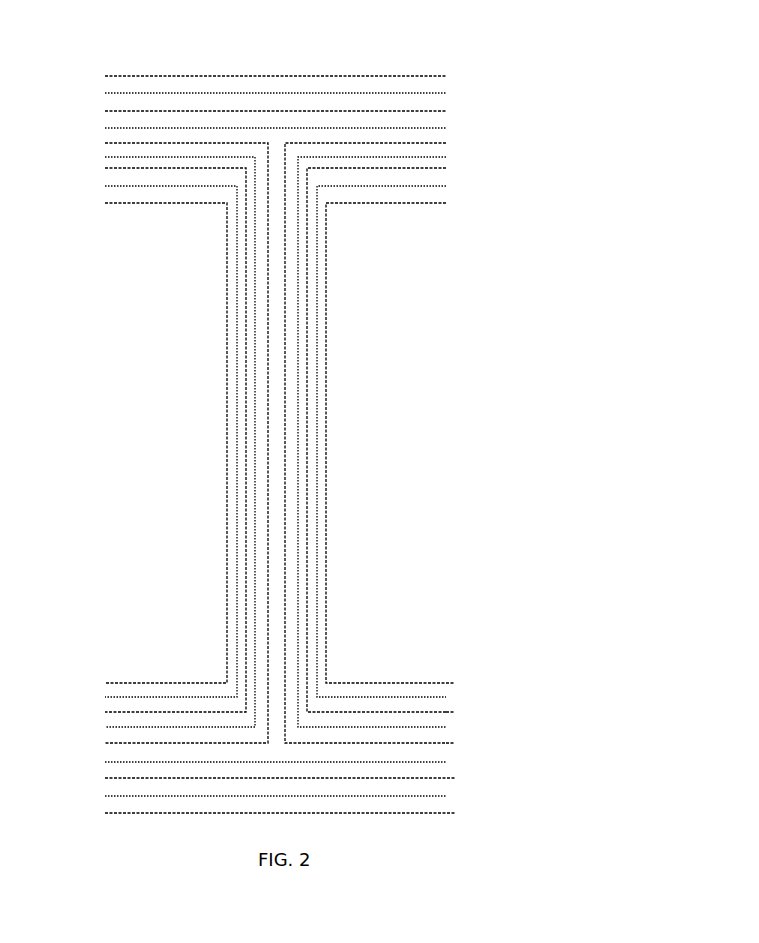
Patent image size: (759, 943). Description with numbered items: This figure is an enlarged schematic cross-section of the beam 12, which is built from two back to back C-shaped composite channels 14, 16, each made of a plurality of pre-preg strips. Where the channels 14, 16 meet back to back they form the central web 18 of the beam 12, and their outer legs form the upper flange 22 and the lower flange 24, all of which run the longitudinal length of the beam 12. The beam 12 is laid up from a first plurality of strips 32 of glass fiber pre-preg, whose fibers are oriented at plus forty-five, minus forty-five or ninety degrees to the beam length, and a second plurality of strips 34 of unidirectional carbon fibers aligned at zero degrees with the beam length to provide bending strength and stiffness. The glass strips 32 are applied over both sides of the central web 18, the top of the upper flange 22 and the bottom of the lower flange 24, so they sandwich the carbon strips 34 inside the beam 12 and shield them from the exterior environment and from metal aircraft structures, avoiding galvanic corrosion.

The beam 12 is at (597, 79).
The C-shaped composite channel 14 is at (128, 418).
The C-shaped composite channel 16 is at (388, 420).
The central web 18 is at (192, 305).
The upper flange 22 is at (177, 60).
The lower flange 24 is at (357, 823).
The first plurality of strips 32 is at (105, 76).
The second plurality of strips 34 is at (446, 93).